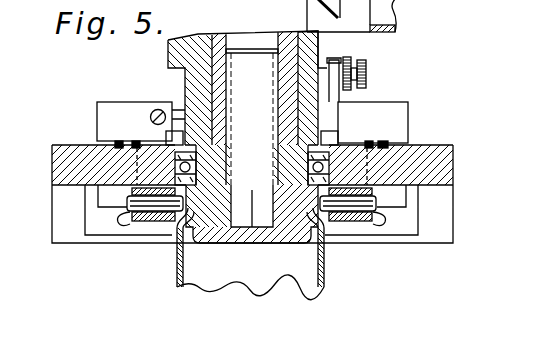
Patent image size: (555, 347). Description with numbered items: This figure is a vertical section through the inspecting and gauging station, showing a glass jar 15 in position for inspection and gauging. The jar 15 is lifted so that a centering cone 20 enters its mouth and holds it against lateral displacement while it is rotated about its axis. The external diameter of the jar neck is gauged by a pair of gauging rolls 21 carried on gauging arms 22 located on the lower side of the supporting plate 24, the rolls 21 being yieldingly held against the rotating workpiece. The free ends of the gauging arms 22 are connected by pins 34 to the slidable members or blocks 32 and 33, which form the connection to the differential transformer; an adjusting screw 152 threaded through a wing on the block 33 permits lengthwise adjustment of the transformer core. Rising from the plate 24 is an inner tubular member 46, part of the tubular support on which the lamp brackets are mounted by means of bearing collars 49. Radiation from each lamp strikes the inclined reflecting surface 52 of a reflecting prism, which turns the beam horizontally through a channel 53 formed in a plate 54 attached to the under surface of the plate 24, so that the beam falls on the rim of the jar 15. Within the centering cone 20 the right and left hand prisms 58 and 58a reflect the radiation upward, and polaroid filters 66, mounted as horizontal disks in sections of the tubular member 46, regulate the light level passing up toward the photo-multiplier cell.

The jar 15 is at (177, 265).
The centering cone 20 is at (295, 222).
The gauging rolls 21 is at (155, 208).
The gauging arms 22 is at (385, 199).
The supporting plate 24 is at (430, 148).
The slidable member 32 is at (106, 115).
The slidable member 33 is at (392, 108).
The pins 34 is at (127, 142).
The inner tubular member 46 is at (285, 101).
The bearing collars 49 is at (318, 46).
The reflecting surface 52 is at (314, 16).
The channel 53 is at (412, 16).
The plate 54 is at (447, 209).
The prism 58 is at (240, 220).
The prism 58a is at (261, 191).
The polaroid filters 66 is at (259, 50).
The adjusting screw 152 is at (368, 69).